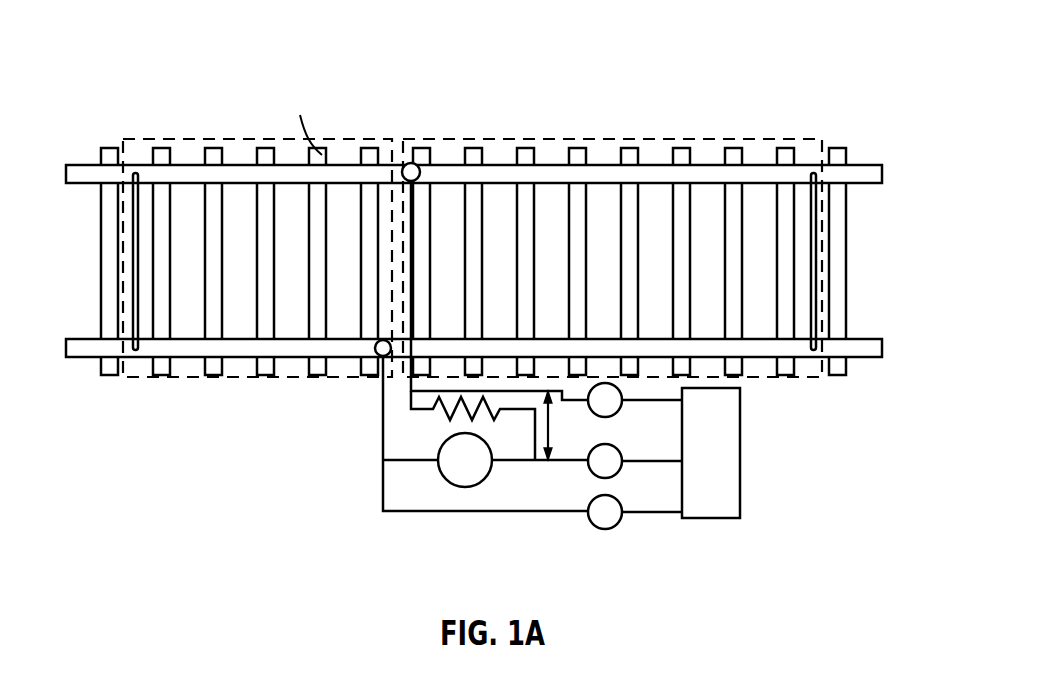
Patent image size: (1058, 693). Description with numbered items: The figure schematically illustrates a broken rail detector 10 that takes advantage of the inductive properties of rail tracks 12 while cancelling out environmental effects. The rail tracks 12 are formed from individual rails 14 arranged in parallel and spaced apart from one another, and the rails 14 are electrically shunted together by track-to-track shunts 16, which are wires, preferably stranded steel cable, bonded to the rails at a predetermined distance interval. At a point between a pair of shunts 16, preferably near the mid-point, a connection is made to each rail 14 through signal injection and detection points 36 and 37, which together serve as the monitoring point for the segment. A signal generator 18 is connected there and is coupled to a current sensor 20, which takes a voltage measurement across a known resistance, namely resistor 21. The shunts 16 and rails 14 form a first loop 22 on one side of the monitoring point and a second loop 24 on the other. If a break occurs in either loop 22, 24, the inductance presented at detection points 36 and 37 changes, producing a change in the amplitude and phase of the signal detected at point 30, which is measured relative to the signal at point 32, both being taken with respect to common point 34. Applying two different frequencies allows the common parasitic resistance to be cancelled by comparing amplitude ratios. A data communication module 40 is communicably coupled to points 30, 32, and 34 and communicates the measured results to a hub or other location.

The detector 10 is at (487, 333).
The rail tracks 12 is at (480, 254).
The rails 14 is at (872, 173).
The track-to-track shunts 16 is at (133, 278).
The signal generator 18 is at (447, 470).
The current sensor 20 is at (567, 427).
The resistor 21 is at (433, 410).
The first loop 22 is at (217, 378).
The second loop 24 is at (802, 378).
The point 30 is at (607, 410).
The point 32 is at (607, 471).
The common point 34 is at (607, 522).
The signal injection and detection point 36 is at (378, 355).
The signal injection and detection point 37 is at (405, 164).
The data communication module 40 is at (726, 467).